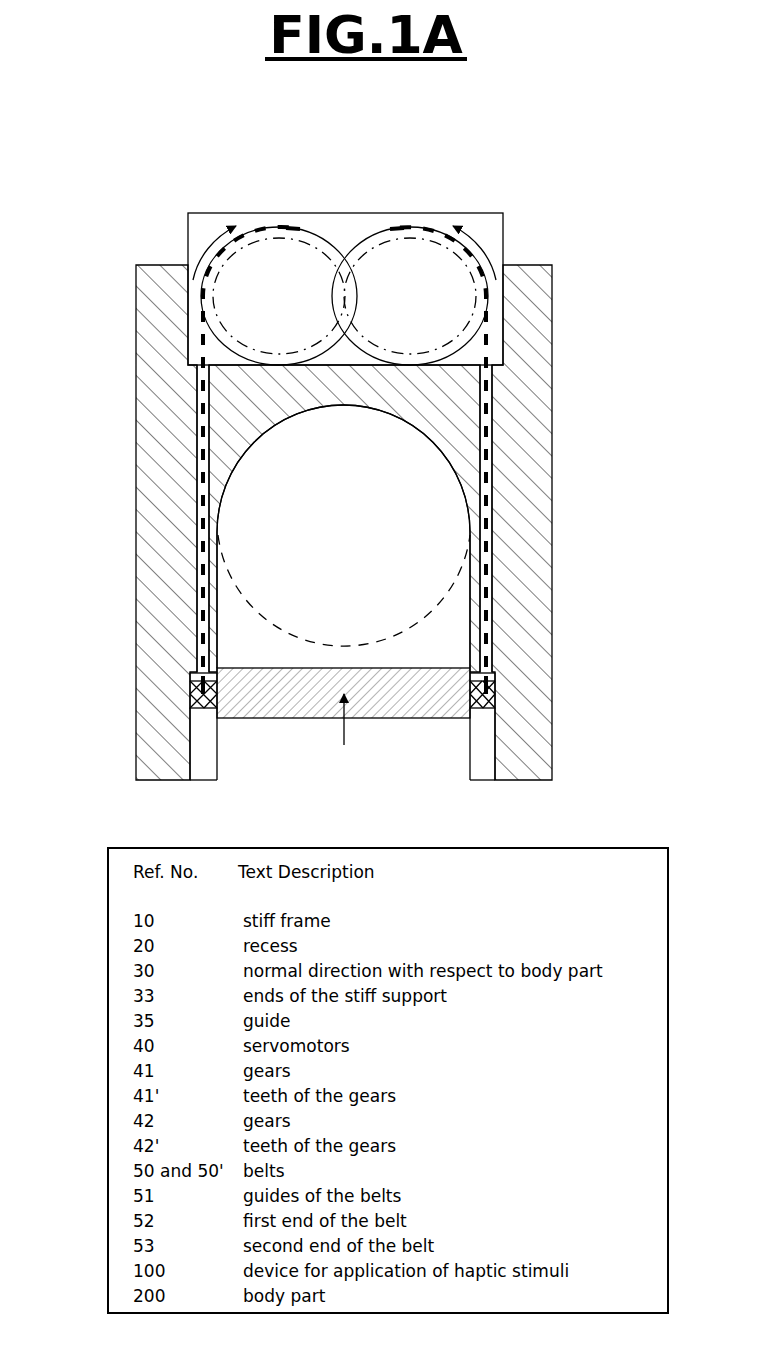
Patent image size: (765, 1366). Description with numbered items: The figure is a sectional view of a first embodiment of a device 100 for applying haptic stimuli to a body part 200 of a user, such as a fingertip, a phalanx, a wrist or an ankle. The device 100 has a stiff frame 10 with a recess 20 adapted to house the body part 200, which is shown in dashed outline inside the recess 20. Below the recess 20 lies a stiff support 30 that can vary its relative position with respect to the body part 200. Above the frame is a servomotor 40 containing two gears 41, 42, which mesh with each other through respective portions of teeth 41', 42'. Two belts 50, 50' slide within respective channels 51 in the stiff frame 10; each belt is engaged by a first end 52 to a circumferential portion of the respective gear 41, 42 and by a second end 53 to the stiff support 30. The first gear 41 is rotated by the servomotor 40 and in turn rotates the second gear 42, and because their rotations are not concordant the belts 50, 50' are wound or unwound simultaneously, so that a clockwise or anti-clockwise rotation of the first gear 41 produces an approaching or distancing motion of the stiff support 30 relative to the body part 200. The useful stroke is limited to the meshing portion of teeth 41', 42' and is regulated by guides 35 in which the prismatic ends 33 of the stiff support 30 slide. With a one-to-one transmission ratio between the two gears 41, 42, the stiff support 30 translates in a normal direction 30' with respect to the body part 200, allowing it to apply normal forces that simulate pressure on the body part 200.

The stiff frame 10 is at (136, 288).
The recess 20 is at (432, 662).
The stiff support 30 is at (343, 720).
The normal direction 30' is at (313, 745).
The prismatic ends 33 is at (192, 698).
The guides 35 is at (202, 774).
The servomotor 40 is at (182, 219).
The first gear 41 is at (279, 270).
The teeth of first gear 41' is at (279, 296).
The second gear 42 is at (410, 266).
The teeth of second gear 42' is at (410, 296).
The belt 50 is at (489, 458).
The belt 50' is at (188, 458).
The channels 51 is at (195, 434).
The first end 52 is at (290, 225).
The second end 53 is at (401, 226).
The device for applying haptic stimuli 100 is at (588, 201).
The body part 200 is at (418, 580).